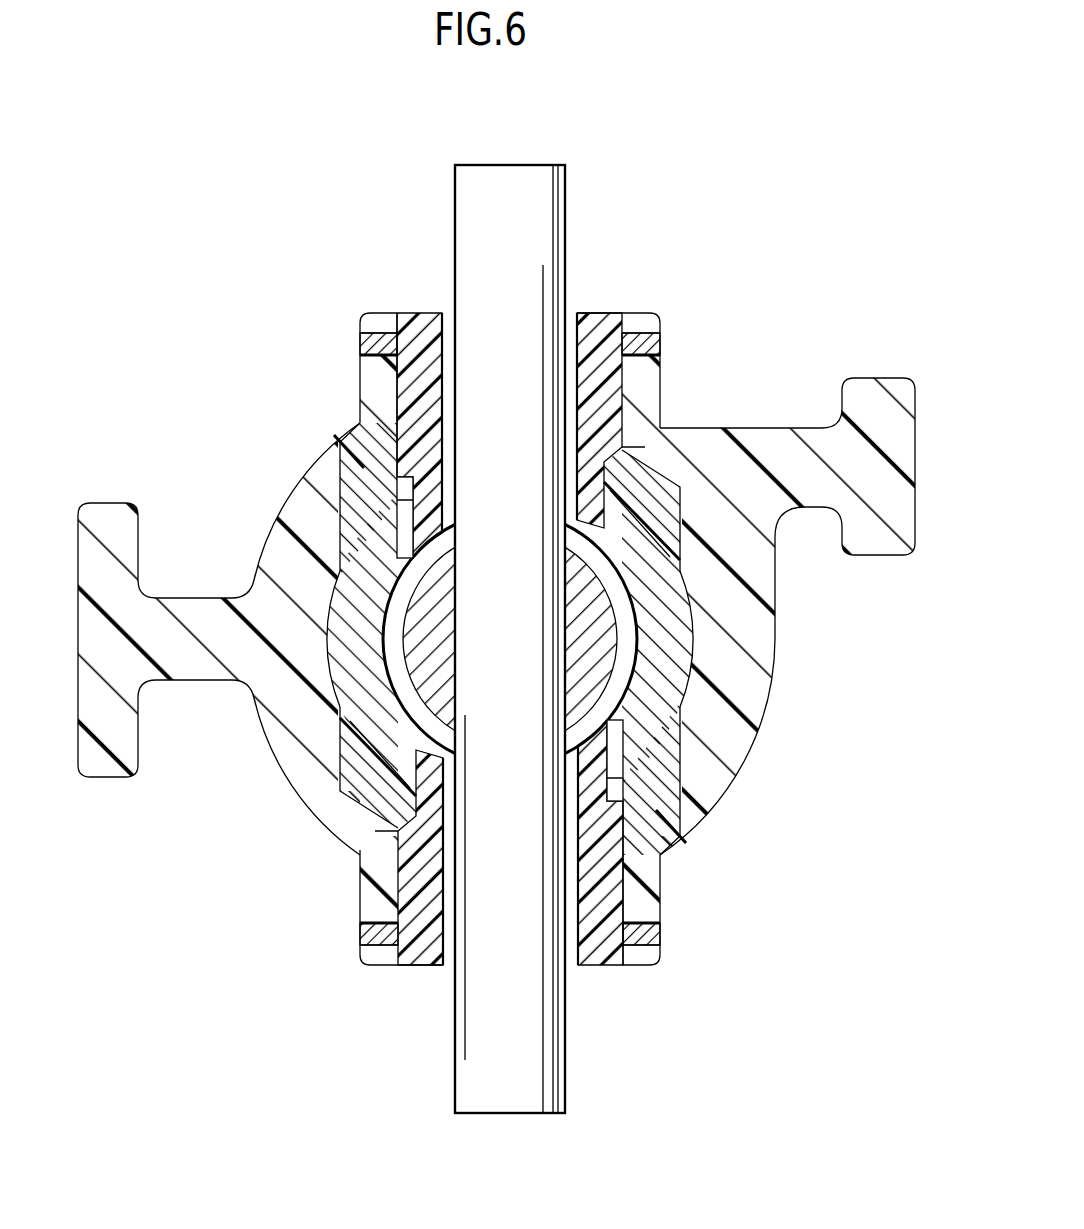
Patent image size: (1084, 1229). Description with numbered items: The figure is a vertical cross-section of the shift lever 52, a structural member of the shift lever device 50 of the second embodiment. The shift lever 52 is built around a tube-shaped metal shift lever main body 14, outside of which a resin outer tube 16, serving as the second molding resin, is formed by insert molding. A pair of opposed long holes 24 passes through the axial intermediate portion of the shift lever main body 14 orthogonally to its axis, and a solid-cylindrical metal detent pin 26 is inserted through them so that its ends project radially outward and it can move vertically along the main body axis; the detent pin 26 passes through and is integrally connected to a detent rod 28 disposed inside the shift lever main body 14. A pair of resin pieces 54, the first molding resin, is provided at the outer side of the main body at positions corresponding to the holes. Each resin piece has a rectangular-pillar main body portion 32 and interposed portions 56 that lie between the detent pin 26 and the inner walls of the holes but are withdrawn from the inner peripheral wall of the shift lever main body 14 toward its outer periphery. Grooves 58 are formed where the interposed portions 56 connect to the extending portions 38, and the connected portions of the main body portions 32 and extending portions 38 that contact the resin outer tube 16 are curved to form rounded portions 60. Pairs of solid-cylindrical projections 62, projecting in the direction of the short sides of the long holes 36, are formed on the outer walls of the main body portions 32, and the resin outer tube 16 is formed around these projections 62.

The shift lever main body 14 is at (357, 683).
The resin outer tube 16 is at (275, 546).
The long holes 24 is at (600, 572).
The detent pin 26 is at (550, 197).
The detent rod 28 is at (595, 650).
The main body portions 32 is at (598, 313).
The long holes 36 is at (458, 365).
The extending portions 38 is at (350, 517).
The shift lever device 50 is at (521, 639).
The shift lever 52 is at (782, 720).
The resin pieces 54 is at (396, 387).
The interposed portions 56 is at (440, 500).
The grooves 58 is at (340, 443).
The rounded portions 60 is at (632, 446).
The projections 62 is at (372, 345).